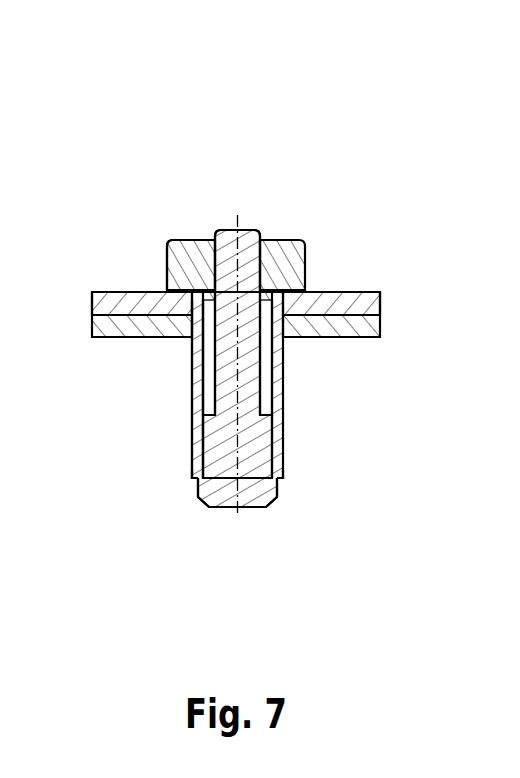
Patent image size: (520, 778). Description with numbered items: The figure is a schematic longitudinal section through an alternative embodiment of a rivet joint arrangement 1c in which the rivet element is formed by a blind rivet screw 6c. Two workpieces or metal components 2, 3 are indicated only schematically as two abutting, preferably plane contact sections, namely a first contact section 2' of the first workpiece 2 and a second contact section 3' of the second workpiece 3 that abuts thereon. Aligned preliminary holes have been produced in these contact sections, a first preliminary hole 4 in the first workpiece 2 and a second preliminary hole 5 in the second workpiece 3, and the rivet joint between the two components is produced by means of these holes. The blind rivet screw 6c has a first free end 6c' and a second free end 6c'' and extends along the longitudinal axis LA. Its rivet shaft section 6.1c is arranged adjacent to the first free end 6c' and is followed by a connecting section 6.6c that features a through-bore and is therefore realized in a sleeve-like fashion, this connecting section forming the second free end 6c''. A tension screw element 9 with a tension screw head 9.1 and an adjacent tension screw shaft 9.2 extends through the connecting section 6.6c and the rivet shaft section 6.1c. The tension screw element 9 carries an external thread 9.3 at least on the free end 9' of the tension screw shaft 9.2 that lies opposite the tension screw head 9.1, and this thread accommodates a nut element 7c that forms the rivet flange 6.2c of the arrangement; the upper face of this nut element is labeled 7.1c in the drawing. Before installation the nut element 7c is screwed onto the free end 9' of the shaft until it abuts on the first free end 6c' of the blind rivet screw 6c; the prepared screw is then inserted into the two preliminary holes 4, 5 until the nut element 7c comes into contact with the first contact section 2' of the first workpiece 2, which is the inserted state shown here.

The rivet joint arrangement 1c is at (243, 346).
The first workpiece or metal component 2 is at (272, 290).
The first contact section 2' is at (283, 254).
The second workpiece or metal component 3 is at (272, 329).
The second contact section 3' is at (240, 394).
The first preliminary hole 4 is at (212, 299).
The second preliminary hole 5 is at (243, 333).
The blind rivet screw 6c is at (203, 382).
The rivet shaft section 6.1c is at (185, 363).
The rivet flange 6.2c is at (158, 263).
The connecting section 6.6c is at (182, 468).
The first free end 6c' is at (248, 204).
The second free end 6c'' is at (261, 563).
The nut element 7c is at (302, 267).
The top surface of flange 7.1c is at (300, 238).
The tension screw element 9 is at (248, 335).
The free end of the tension screw shaft 9' is at (237, 168).
The tension screw head 9.1 is at (210, 507).
The tension screw shaft 9.2 is at (212, 240).
The external thread 9.3 is at (217, 240).
The longitudinal axis LA is at (233, 399).